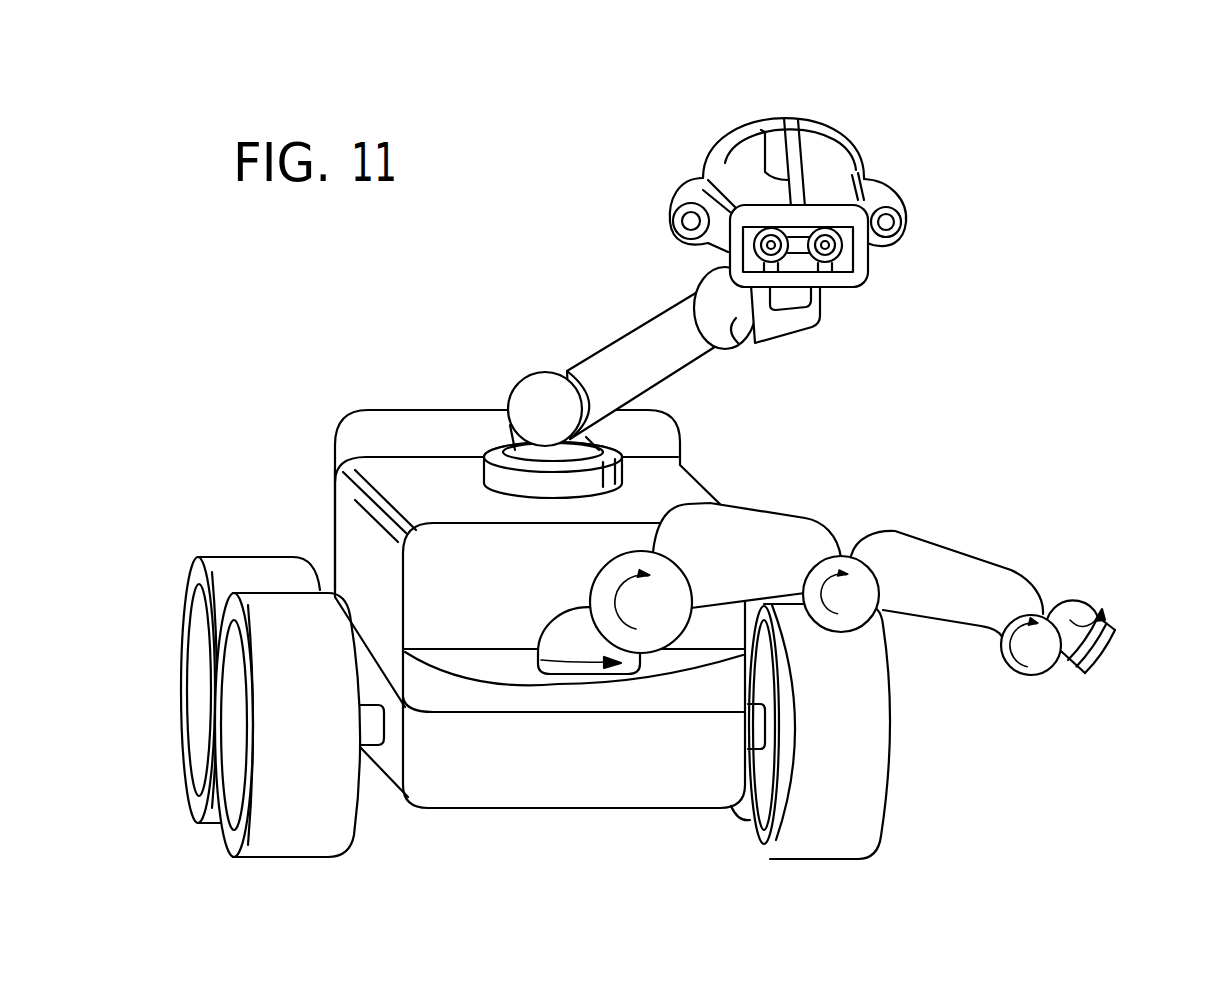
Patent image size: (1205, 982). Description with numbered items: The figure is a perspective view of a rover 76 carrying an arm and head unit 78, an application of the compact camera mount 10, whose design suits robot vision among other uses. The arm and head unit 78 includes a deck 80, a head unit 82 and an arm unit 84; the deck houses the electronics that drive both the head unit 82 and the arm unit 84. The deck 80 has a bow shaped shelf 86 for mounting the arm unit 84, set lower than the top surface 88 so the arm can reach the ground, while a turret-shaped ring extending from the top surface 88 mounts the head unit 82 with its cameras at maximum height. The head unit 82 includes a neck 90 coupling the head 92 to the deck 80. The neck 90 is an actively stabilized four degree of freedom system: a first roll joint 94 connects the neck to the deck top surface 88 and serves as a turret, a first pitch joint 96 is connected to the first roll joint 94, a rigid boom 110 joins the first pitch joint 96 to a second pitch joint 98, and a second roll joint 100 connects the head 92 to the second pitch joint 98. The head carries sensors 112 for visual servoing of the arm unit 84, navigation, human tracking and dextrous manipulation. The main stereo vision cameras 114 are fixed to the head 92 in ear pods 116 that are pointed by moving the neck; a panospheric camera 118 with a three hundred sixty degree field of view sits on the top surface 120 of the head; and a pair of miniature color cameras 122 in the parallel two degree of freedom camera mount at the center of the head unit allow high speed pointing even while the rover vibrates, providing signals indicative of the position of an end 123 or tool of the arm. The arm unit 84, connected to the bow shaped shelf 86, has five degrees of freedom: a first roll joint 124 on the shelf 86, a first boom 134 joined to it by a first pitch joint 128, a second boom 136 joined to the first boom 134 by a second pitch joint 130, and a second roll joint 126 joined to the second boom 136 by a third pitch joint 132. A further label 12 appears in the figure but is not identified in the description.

The rover 76 is at (592, 60).
The arm and head unit 78 is at (296, 440).
The deck 80 is at (352, 540).
The head unit 82 is at (553, 290).
The arm unit 84 is at (864, 491).
The bow shaped shelf 86 is at (508, 652).
The top surface 88 is at (430, 475).
The neck 90 is at (607, 345).
The head 92 is at (830, 180).
The first roll joint 94 is at (520, 440).
The first pitch joint 96 is at (543, 383).
The second pitch joint 98 is at (738, 320).
The second roll joint 100 is at (703, 290).
The rigid boom 110 is at (650, 368).
The sensors 112 is at (948, 197).
The main stereo vision cameras 114 is at (690, 222).
The ear pods 116 is at (686, 192).
The panospheric camera 118 is at (773, 150).
The top surface of the head 120 is at (836, 160).
The miniature color cameras 122 is at (768, 245).
The camera mount 10 is at (842, 256).
The lens 12 is at (828, 258).
The end 123 is at (1100, 668).
The first roll joint 124 is at (570, 625).
The second roll joint 126 is at (1080, 630).
The first pitch joint 128 is at (672, 618).
The second pitch joint 130 is at (872, 613).
The third pitch joint 132 is at (1040, 655).
The first boom 134 is at (765, 565).
The second boom 136 is at (965, 596).